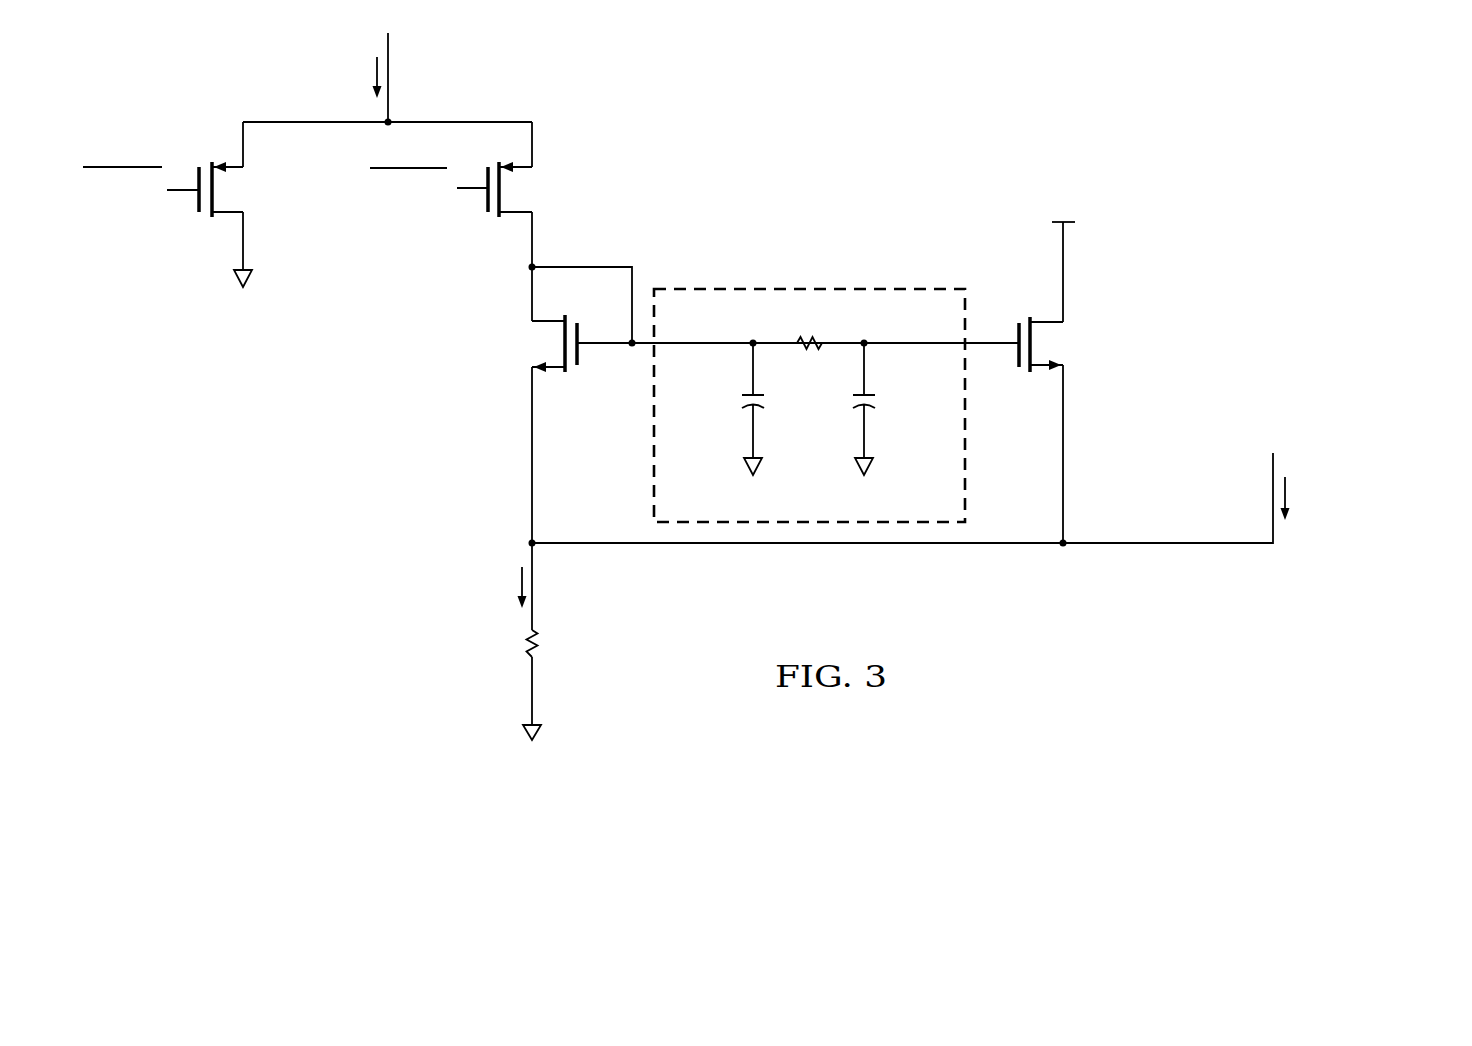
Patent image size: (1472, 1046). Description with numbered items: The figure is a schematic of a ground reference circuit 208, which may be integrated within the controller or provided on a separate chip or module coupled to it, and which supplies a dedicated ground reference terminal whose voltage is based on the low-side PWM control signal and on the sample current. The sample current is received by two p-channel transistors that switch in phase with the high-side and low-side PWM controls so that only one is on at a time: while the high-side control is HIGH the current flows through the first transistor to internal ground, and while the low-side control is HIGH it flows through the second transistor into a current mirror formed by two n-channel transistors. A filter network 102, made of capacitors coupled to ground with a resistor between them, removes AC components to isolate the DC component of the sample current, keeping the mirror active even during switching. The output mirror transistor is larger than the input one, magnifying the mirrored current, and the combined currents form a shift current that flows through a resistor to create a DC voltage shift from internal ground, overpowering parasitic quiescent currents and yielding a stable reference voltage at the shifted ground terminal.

The filter 102 is at (809, 371).
The ground reference circuit 208 is at (768, 402).